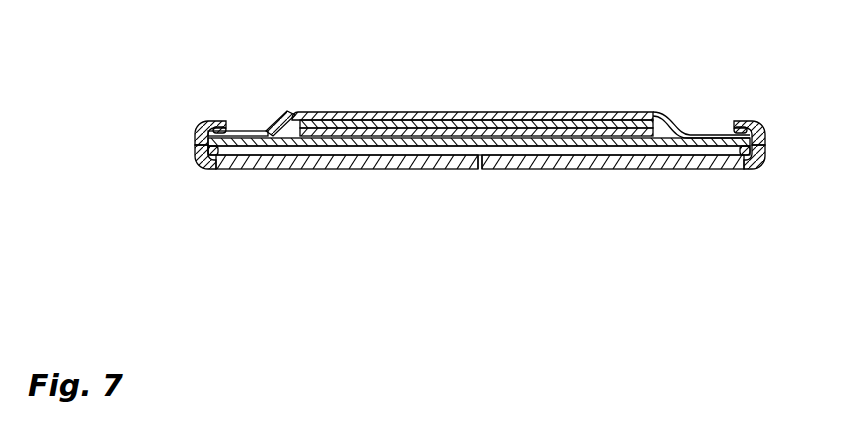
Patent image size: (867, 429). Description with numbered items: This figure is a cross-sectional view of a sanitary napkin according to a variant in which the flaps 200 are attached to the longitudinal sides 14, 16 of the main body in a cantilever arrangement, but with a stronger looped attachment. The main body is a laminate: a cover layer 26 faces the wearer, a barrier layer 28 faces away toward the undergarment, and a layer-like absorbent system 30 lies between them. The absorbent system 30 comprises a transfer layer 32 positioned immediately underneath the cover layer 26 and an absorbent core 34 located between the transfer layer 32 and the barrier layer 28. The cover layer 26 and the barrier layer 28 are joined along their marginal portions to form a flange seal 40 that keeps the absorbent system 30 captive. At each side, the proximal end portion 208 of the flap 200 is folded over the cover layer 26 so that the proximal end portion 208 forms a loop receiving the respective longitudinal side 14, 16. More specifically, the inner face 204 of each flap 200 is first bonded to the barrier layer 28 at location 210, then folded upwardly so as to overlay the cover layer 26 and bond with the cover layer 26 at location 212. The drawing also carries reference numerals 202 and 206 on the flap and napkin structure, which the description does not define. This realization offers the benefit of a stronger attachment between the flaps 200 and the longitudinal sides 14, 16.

The longitudinal side 14 is at (751, 152).
The longitudinal side 16 is at (211, 151).
The cover layer 26 is at (398, 114).
The barrier layer 28 is at (562, 141).
The absorbent system 30 is at (288, 115).
The transfer layer 32 is at (429, 125).
The absorbent core 34 is at (483, 134).
The flange seal 40 is at (244, 134).
The flap 200 is at (346, 166).
The spacer layer 202 is at (284, 160).
The inner face 204 is at (404, 152).
The gap 206 is at (471, 158).
The proximal end portion 208 is at (216, 127).
The bonding location 210 is at (206, 168).
The bonding location 212 is at (209, 124).